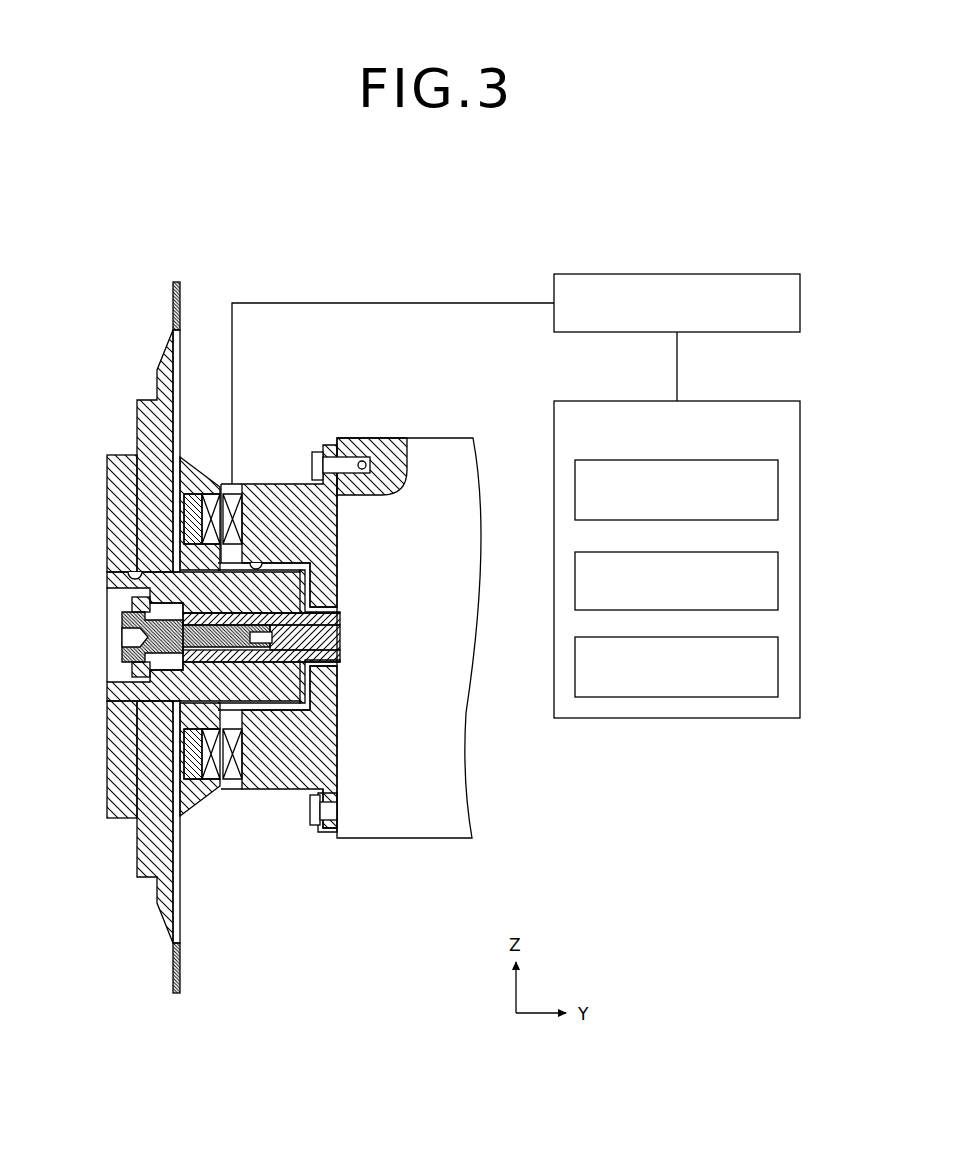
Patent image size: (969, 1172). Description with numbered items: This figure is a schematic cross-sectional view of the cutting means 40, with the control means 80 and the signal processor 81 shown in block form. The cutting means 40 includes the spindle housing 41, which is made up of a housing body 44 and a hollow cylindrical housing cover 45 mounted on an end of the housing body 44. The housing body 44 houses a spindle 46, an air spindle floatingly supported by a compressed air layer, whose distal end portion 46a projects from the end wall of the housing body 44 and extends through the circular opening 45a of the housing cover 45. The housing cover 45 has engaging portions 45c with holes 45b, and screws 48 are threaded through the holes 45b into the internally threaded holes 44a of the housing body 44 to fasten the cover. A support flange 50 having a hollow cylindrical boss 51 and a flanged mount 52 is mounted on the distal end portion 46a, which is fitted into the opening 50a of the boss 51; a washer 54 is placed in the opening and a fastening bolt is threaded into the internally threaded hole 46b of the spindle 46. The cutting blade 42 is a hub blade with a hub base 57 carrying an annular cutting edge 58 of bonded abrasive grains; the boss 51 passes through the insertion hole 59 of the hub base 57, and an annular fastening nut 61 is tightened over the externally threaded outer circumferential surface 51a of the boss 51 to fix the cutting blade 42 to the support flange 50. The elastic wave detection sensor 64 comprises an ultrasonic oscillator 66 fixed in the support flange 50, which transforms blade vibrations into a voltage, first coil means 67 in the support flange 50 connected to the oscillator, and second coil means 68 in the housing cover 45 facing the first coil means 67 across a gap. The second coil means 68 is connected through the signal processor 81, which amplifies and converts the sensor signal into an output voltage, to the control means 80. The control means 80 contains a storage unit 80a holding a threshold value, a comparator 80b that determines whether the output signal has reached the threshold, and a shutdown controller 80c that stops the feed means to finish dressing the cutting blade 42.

The cutting means 40 is at (123, 268).
The spindle housing 41 is at (441, 363).
The cutting blade 42 is at (107, 283).
The housing body 44 is at (437, 448).
The internally threaded holes 44a is at (360, 460).
The housing cover 45 is at (283, 485).
The circular opening 45a is at (257, 560).
The holes 45b is at (337, 812).
The engaging portions 45c is at (323, 832).
The spindle 46 is at (345, 635).
The distal end portion 46a is at (200, 665).
The internally threaded hole 46b is at (272, 637).
The screws 48 is at (310, 810).
The support flange 50 is at (210, 470).
The opening 50a is at (272, 622).
The boss 51 is at (107, 578).
The externally threaded outer circumferential surface 51a is at (107, 705).
The flanged mount 52 is at (184, 480).
The washer 54 is at (130, 605).
The hub base 57 is at (160, 372).
The cutting edge 58 is at (172, 302).
The insertion hole 59 is at (128, 575).
The fastening nut 61 is at (107, 471).
The elastic wave detection sensor 64 is at (266, 858).
The ultrasonic oscillator 66 is at (193, 782).
The first coil means 67 is at (208, 782).
The second coil means 68 is at (240, 782).
The control means 80 is at (800, 425).
The storage unit 80a is at (778, 497).
The comparator 80b is at (778, 587).
The shutdown controller 80c is at (778, 674).
The signal processor 81 is at (800, 316).